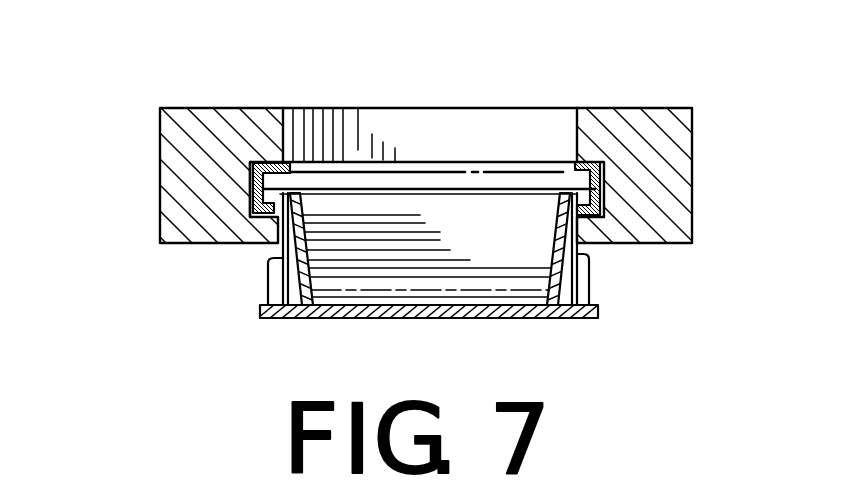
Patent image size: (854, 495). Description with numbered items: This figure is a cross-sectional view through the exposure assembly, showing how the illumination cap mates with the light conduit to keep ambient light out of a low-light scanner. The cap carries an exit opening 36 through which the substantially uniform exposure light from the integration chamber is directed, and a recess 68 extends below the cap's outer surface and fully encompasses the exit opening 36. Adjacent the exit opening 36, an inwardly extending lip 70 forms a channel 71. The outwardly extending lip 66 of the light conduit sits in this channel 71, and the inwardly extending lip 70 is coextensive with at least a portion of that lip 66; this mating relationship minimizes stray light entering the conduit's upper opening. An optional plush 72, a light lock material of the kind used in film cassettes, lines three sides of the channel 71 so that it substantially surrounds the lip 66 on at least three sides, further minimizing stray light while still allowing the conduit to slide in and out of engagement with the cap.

The exit opening 36 is at (489, 117).
The outwardly extending lip 66 is at (576, 182).
The recess 68 is at (256, 168).
The inwardly extending lip 70 is at (272, 228).
The channel 71 is at (300, 172).
The plush 72 is at (302, 208).